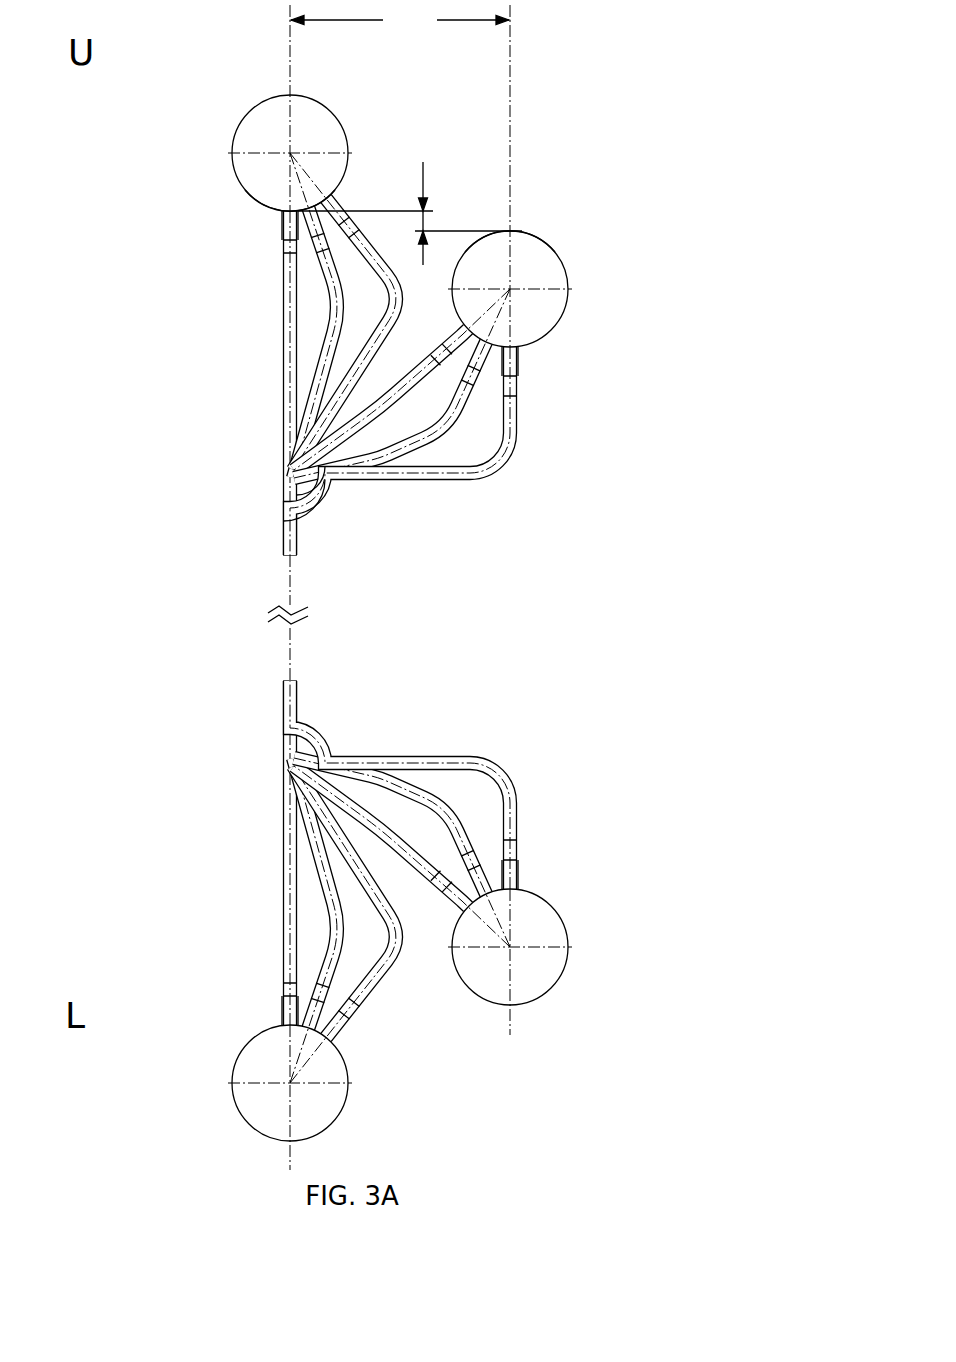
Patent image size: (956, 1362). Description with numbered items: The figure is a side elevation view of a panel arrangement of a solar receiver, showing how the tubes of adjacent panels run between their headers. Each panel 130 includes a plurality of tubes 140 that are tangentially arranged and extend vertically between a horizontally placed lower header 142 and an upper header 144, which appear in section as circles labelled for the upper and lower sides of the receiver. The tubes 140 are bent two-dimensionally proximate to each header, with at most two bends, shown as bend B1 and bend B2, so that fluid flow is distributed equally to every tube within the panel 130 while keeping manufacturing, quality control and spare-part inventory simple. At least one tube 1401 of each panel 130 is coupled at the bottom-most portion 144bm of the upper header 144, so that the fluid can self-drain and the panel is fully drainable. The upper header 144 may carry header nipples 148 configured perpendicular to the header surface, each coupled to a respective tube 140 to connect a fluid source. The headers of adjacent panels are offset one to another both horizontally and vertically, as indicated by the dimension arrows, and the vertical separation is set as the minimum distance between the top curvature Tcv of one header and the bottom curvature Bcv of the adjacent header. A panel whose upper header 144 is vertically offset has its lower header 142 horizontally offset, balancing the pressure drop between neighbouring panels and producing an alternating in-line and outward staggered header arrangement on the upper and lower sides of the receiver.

The panel 130 is at (205, 542).
The tubes 140 is at (347, 375).
The tube 1401 is at (543, 581).
The upper header 144 is at (346, 131).
The bottom-most portion of the upper header 144bm is at (592, 460).
The header nipples 148 is at (443, 877).
The lower header 142 is at (546, 901).
The bend B1 is at (509, 472).
The bend B2 is at (309, 500).
The bottom curvature Bcv is at (263, 205).
The top curvature Tcv is at (539, 239).